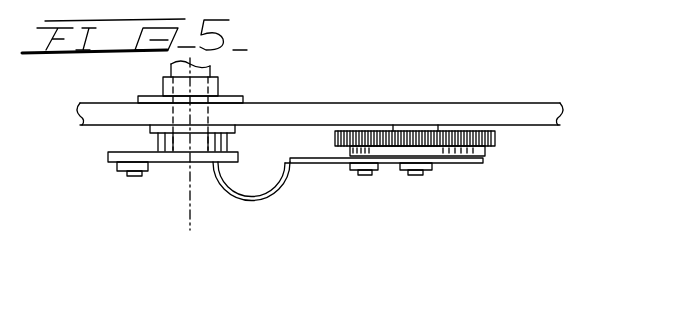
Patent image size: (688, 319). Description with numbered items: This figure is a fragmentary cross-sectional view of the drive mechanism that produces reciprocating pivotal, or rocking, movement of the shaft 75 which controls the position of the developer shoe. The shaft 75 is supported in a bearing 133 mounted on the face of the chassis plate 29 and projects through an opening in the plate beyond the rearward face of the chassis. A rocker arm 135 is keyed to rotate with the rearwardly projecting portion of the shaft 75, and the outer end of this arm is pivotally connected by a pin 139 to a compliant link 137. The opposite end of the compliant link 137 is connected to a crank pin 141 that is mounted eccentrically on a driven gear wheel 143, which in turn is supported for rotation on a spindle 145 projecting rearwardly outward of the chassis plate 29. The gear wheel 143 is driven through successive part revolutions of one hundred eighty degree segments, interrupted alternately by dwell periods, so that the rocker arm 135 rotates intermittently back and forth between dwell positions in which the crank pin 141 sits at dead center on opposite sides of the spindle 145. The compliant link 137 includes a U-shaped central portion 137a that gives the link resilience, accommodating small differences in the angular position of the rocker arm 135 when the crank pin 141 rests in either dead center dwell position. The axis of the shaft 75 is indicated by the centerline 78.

The chassis plate 29 is at (330, 103).
The shaft 75 is at (210, 68).
The axis 78 is at (187, 201).
The bearing 133 is at (218, 78).
The rocker arm 135 is at (108, 155).
The compliant link 137 is at (348, 214).
The U-shaped central portion 137a is at (255, 202).
The pin 139 is at (129, 176).
The crank pin 141 is at (364, 175).
The driven gear wheel 143 is at (483, 163).
The spindle 145 is at (417, 175).